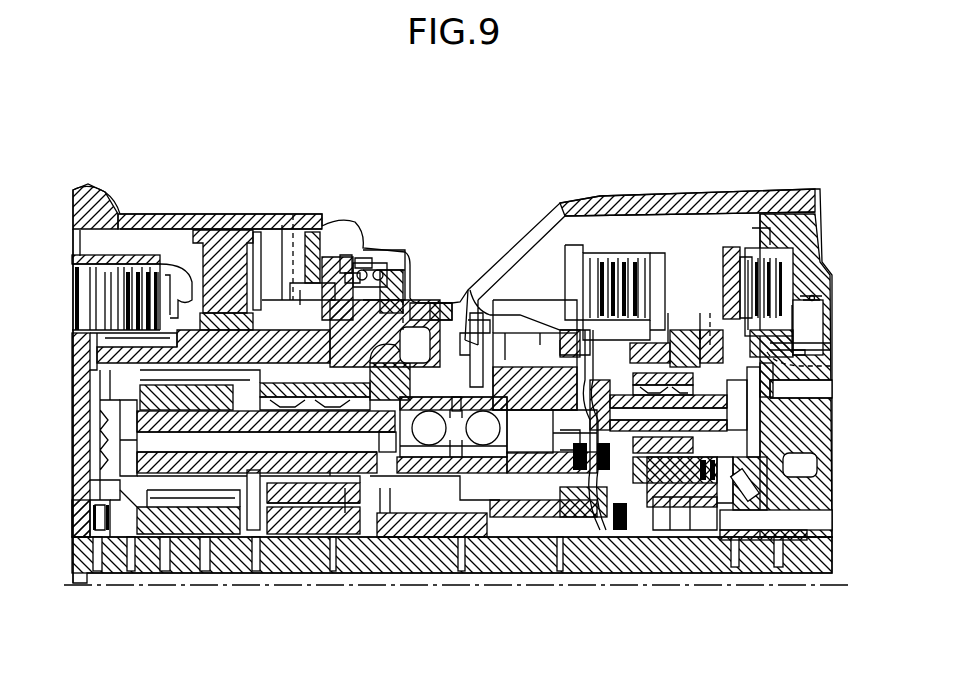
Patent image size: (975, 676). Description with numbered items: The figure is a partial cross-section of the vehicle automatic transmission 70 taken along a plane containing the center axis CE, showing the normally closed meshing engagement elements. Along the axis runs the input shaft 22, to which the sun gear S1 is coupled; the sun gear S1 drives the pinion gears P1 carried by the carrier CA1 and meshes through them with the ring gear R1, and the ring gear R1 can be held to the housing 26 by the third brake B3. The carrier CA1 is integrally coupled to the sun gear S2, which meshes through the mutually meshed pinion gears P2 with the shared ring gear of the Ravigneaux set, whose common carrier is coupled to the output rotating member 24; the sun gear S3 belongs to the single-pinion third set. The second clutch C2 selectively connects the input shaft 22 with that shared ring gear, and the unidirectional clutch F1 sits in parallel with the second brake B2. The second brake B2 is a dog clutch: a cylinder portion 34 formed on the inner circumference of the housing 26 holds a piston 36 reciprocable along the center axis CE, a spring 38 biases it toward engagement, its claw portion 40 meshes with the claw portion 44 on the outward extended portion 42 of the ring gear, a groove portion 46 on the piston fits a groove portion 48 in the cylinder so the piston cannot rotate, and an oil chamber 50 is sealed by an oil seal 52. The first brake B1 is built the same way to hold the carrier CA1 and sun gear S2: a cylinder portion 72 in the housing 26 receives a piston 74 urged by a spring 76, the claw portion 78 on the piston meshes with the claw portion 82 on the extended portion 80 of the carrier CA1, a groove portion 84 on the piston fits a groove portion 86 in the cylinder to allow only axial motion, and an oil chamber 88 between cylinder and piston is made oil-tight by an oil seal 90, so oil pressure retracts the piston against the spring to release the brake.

The vehicle automatic transmission 70 is at (147, 127).
The oil seal 52 is at (300, 290).
The claw portion 40 is at (293, 215).
The claw portion 44 is at (283, 225).
The oil chamber 50 is at (328, 222).
The cylinder portion 34 is at (345, 272).
The spring 38 is at (405, 300).
The piston 36 is at (410, 300).
The groove portion 46 is at (403, 300).
The output rotating member 24 is at (510, 345).
The groove portion 48 is at (402, 302).
The housing 26 is at (590, 202).
The extended portion 80 is at (668, 313).
The claw portion 78 is at (710, 313).
The claw portion 82 is at (687, 313).
The oil chamber 88 is at (748, 257).
The oil seal 90 is at (760, 227).
The cylinder portion 72 is at (792, 273).
The spring 76 is at (803, 300).
The piston 74 is at (798, 330).
The groove portion 86 is at (803, 347).
The groove portion 84 is at (767, 353).
The extended portion 42 is at (261, 232).
The input shaft 22 is at (477, 570).
The second clutch C2 is at (117, 252).
The unidirectional clutch F1 is at (222, 232).
The second brake B2 is at (361, 255).
The third brake B3 is at (561, 277).
The ring gear R1 is at (660, 300).
The first brake B1 is at (783, 221).
The center axis CE is at (80, 565).
The sun gear S2 is at (303, 520).
The sun gear S3 is at (233, 492).
The pinion gears P2 is at (387, 500).
The sun gear S1 is at (655, 540).
The pinion gears P1 is at (665, 483).
The carrier CA1 is at (707, 530).